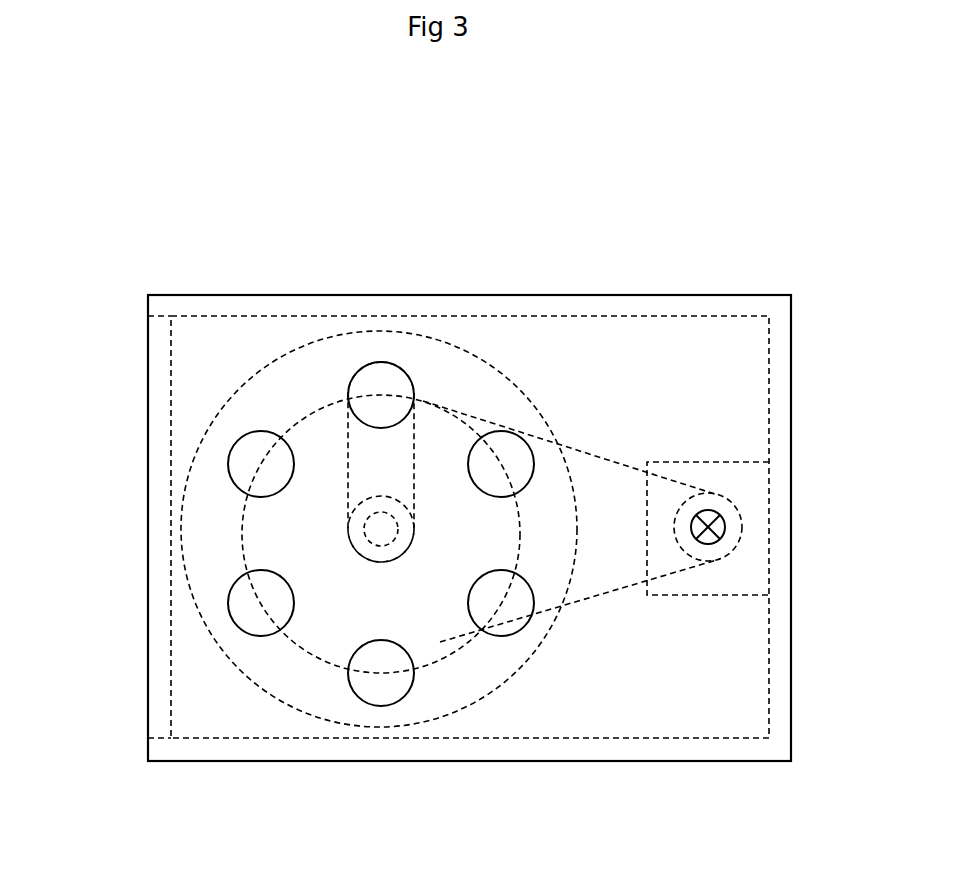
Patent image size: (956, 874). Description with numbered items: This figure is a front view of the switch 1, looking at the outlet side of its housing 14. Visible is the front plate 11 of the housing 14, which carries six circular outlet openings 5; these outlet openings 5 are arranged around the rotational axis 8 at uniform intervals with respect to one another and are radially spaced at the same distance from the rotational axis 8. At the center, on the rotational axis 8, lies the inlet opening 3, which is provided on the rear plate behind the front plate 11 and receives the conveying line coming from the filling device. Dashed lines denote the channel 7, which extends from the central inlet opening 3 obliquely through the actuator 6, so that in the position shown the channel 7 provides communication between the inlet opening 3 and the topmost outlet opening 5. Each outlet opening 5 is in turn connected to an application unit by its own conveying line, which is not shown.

The switch 1 is at (132, 182).
The inlet opening 3 is at (357, 518).
The outlet openings 5 is at (385, 380).
The actuator 6 is at (317, 382).
The channel 7 is at (387, 448).
The rotational axis 8 is at (385, 534).
The front plate 11 is at (718, 393).
The housing 14 is at (703, 286).